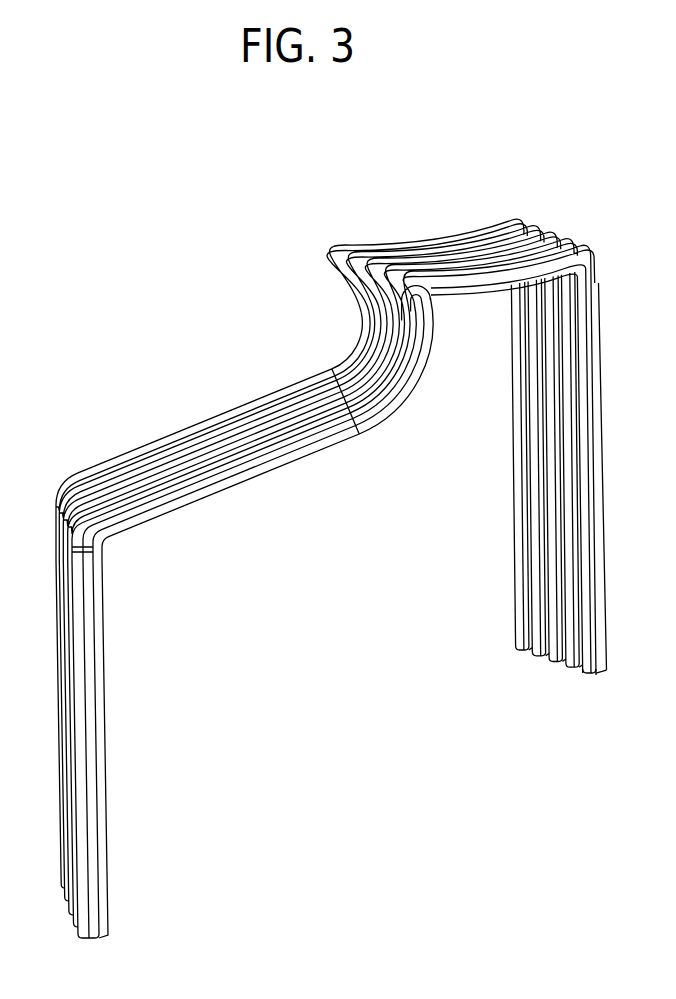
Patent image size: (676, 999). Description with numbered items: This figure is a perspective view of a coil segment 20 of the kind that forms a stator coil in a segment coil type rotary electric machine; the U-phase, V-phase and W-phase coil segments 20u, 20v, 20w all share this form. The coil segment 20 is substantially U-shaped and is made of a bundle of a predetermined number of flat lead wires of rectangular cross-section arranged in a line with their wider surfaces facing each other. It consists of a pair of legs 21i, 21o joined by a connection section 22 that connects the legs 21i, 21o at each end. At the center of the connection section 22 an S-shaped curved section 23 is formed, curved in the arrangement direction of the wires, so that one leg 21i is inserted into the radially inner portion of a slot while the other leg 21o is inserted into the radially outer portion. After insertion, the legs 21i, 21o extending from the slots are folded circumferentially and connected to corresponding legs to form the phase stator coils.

The coil segment 20 is at (192, 217).
The U-phase coil segment 20u is at (331, 566).
The V-phase coil segment 20v is at (331, 566).
The W-phase coil segment 20w is at (331, 566).
The leg 21o is at (102, 709).
The leg 21i is at (515, 564).
The connection section 22 is at (190, 426).
The S-shaped curved section 23 is at (325, 263).